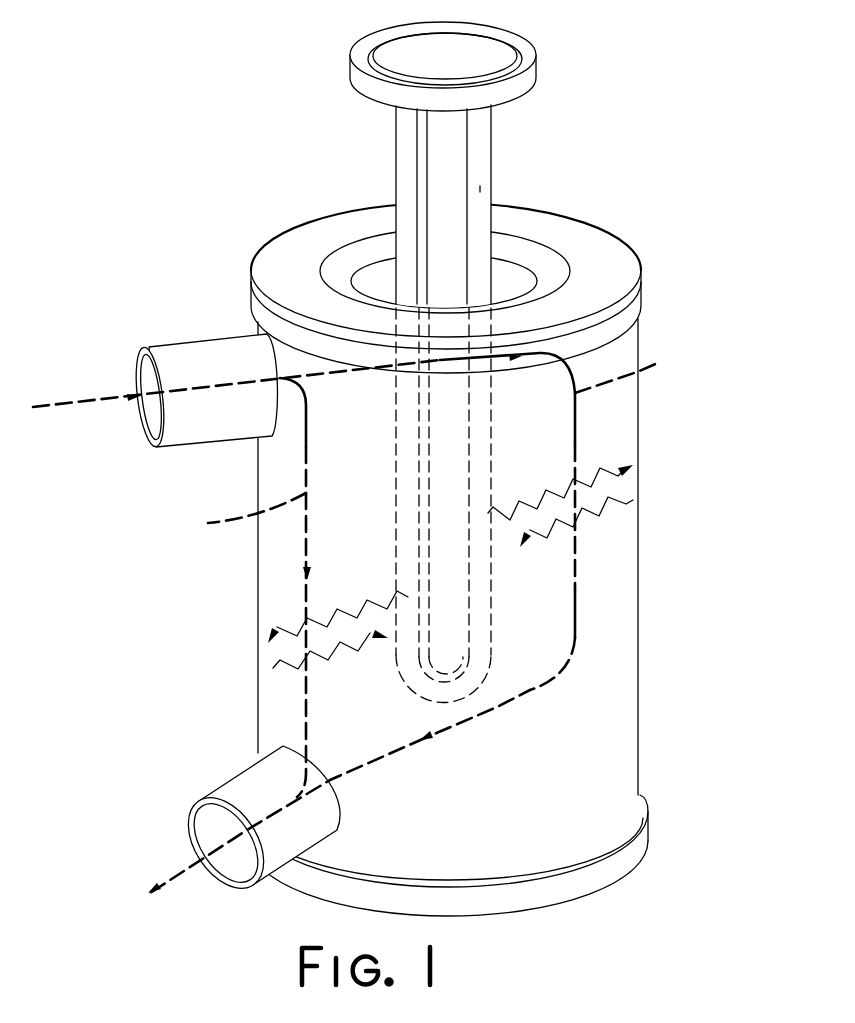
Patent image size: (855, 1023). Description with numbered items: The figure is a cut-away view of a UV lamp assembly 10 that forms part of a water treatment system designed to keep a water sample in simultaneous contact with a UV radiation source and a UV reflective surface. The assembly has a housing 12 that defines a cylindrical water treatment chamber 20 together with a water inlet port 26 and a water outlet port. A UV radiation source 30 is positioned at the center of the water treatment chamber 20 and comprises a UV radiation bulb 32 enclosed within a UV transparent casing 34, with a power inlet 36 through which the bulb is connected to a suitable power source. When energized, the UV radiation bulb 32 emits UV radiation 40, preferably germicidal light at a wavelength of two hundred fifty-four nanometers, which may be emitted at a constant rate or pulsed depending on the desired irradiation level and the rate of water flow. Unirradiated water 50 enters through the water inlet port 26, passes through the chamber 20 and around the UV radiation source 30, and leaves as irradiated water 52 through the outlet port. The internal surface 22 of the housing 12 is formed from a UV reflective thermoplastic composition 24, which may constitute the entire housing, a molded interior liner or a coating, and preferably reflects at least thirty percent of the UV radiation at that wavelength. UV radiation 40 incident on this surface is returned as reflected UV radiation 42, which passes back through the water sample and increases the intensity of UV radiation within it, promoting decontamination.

The UV lamp assembly 10 is at (583, 181).
The housing 12 is at (638, 597).
The water treatment chamber 20 is at (437, 567).
The internal surface 22 is at (380, 305).
The UV reflective thermoplastic composition 24 is at (615, 253).
The water inlet port 26 is at (183, 350).
The UV radiation source 30 is at (492, 148).
The UV radiation bulb 32 is at (438, 173).
The UV transparent casing 34 is at (480, 186).
The power inlet 36 is at (362, 52).
The UV radiation 40 is at (590, 482).
The reflected UV radiation 42 is at (583, 517).
The unirradiated water 50 is at (105, 398).
The irradiated water 52 is at (197, 865).